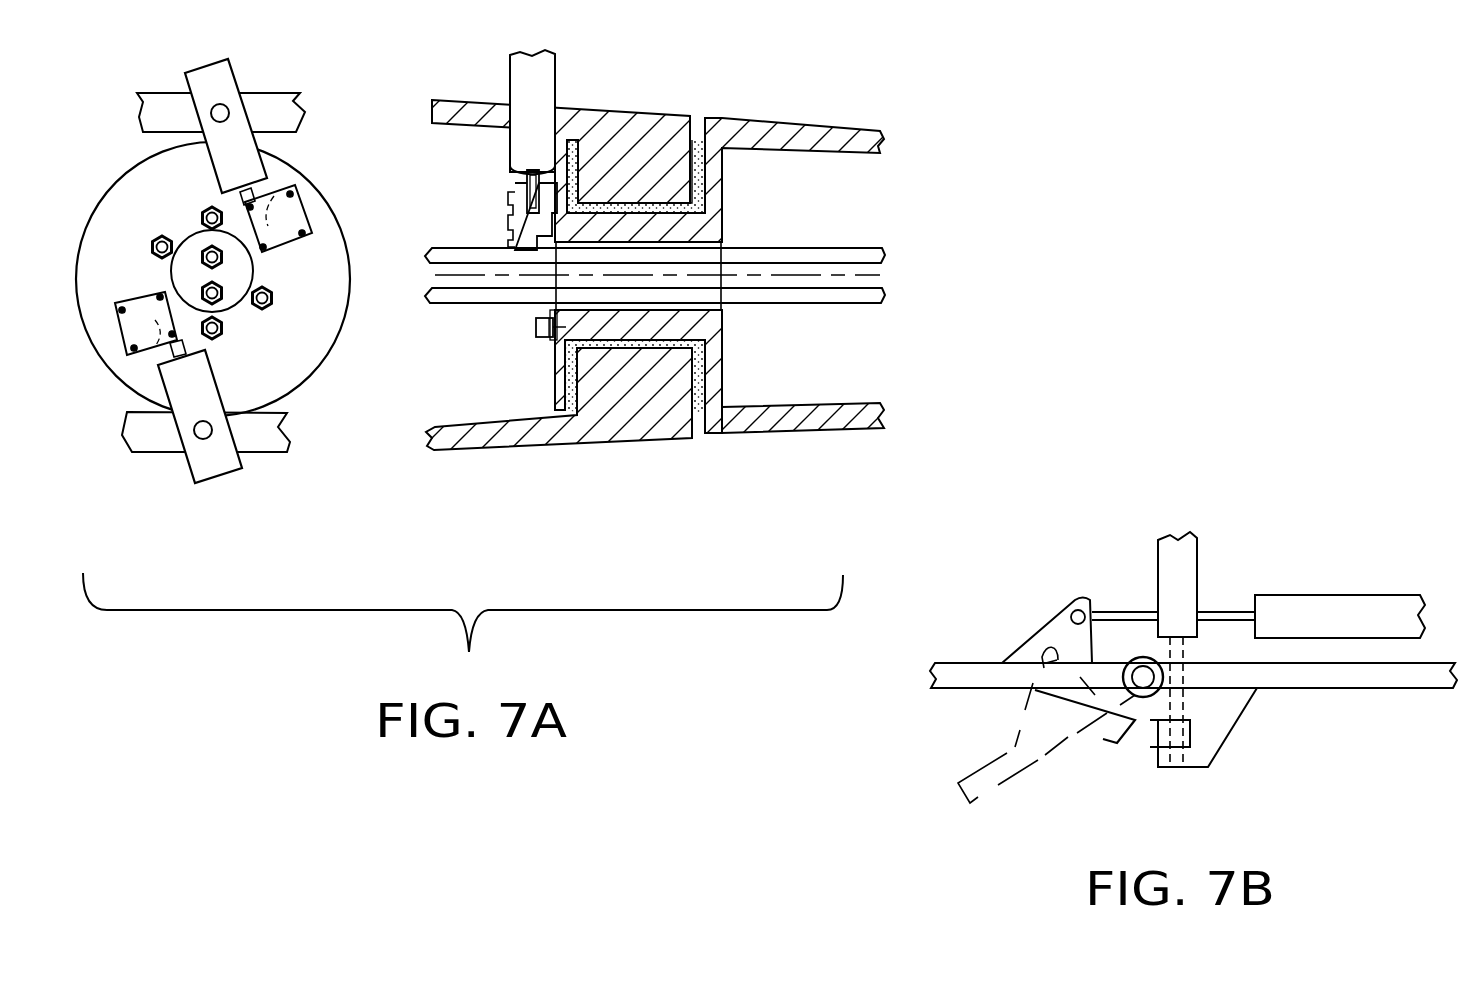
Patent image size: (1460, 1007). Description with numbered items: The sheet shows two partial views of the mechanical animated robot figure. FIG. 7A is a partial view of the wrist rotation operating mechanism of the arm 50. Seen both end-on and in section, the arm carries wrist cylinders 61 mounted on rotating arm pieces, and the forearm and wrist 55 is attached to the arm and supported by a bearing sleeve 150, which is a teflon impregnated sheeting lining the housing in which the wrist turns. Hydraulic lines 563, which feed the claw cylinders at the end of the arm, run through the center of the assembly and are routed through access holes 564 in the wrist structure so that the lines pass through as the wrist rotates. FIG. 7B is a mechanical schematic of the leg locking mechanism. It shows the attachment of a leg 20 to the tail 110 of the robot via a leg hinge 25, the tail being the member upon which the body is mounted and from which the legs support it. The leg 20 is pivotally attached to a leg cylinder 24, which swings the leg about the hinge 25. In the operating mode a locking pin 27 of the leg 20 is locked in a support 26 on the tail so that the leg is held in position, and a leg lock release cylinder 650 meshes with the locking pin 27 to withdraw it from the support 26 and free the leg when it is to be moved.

In FIG. 7A, the wrist cylinder 61 is at (229, 76).
In FIG. 7A, the access hole 564 is at (132, 173).
In FIG. 7A, the hydraulic line 563 is at (884, 252).
In FIG. 7A, the bearing sleeve 150 is at (700, 362).
In FIG. 7A, the wrist and forearm 55 is at (733, 433).
In FIG. 7A, the arm 50 is at (631, 470).
In FIG. 7B, the leg lock release cylinder 650 is at (1192, 562).
In FIG. 7B, the leg cylinder 24 is at (1313, 600).
In FIG. 7B, the leg hinge 25 is at (1142, 660).
In FIG. 7B, the leg 20 is at (970, 690).
In FIG. 7B, the tail 110 is at (1310, 690).
In FIG. 7B, the locking pin 27 is at (1107, 742).
In FIG. 7B, the support 26 is at (1225, 738).